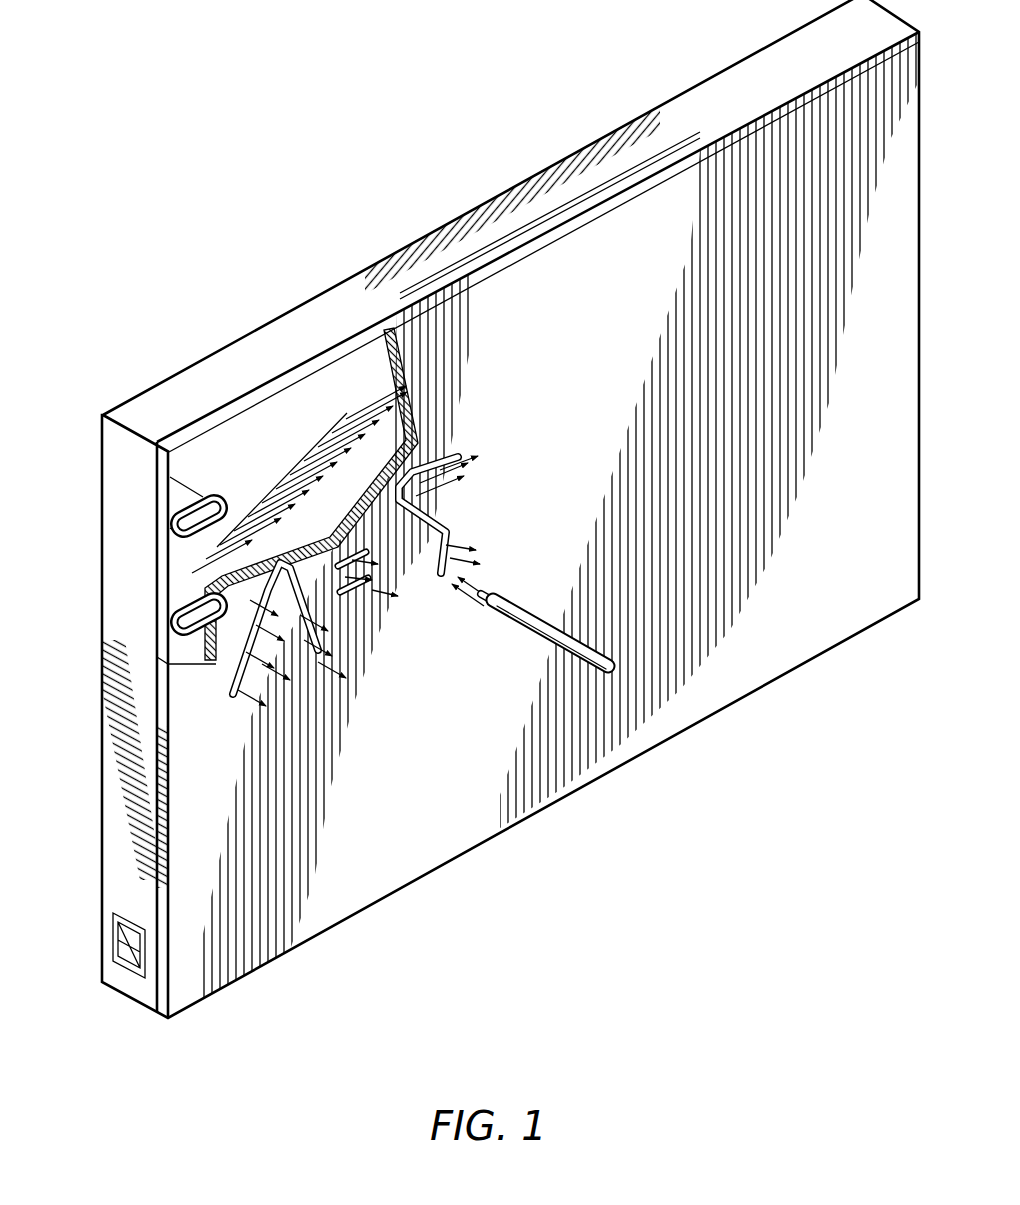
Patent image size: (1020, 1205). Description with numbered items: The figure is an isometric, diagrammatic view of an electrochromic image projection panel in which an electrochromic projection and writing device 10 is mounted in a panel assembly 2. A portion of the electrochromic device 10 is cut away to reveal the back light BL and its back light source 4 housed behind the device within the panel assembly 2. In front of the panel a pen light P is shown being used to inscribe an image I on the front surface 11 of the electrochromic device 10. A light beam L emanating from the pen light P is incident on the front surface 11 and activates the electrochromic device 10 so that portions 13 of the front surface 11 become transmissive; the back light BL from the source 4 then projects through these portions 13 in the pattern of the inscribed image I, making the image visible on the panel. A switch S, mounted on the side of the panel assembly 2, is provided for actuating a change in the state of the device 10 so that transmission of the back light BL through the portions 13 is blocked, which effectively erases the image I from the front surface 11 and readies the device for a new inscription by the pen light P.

The electrochromic projection and writing device 10 is at (733, 113).
The panel assembly 2 is at (224, 335).
The back light source 4 is at (207, 592).
The back light BL is at (320, 458).
The transmitting portions of the front surface 13 is at (468, 547).
The image I is at (468, 568).
The light beam L is at (487, 597).
The pen light P is at (517, 620).
The front surface 11 is at (190, 862).
The switch S is at (113, 960).